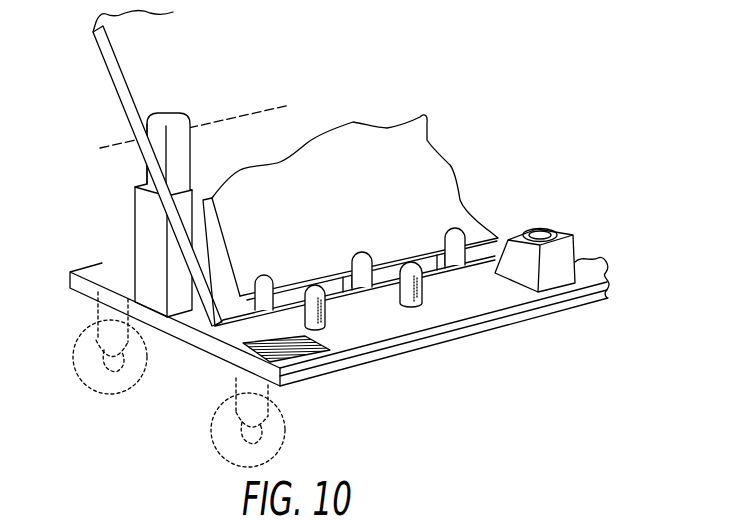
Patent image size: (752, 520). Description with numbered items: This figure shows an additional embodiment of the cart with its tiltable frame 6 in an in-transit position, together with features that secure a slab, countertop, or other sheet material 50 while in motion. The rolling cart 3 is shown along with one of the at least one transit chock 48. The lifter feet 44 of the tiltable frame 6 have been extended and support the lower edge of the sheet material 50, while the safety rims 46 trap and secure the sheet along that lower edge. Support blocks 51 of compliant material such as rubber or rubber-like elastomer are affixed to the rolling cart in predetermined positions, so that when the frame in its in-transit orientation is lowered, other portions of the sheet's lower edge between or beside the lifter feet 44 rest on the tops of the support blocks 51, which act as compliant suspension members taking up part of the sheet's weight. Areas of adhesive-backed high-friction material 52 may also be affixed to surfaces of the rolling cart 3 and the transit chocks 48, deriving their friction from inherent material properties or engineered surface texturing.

The rolling cart 3 is at (80, 258).
The tiltable frame 6 is at (109, 83).
The lifter feet 44 is at (253, 303).
The safety rims 46 is at (459, 213).
The transit chock 48 is at (589, 246).
The sheet material 50 is at (378, 113).
The support blocks 51 is at (331, 332).
The high-friction material 52 is at (298, 369).